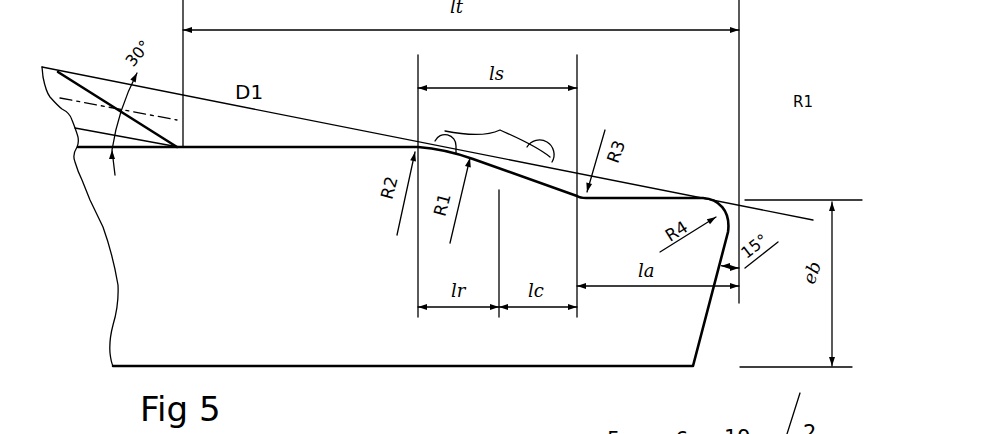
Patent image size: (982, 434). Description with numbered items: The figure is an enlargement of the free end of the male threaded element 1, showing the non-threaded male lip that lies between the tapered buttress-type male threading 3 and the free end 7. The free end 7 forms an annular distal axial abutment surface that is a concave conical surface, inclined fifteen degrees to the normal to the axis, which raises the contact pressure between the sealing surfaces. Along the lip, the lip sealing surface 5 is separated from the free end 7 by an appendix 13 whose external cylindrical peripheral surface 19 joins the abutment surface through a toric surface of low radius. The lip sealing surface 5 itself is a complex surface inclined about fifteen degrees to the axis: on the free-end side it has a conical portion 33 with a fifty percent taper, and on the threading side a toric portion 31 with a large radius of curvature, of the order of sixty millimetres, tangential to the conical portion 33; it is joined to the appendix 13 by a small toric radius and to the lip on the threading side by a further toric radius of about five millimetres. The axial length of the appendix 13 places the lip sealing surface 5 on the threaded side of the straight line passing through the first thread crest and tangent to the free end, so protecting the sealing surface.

The male threaded element 1 is at (312, 108).
The male threading 3 is at (107, 82).
The lip sealing surface 5 is at (497, 129).
The free end 7 is at (715, 307).
The appendix 13 is at (637, 230).
The external cylindrical peripheral surface 19 is at (668, 200).
The toric portion 31 is at (440, 128).
The conical portion 33 is at (530, 170).